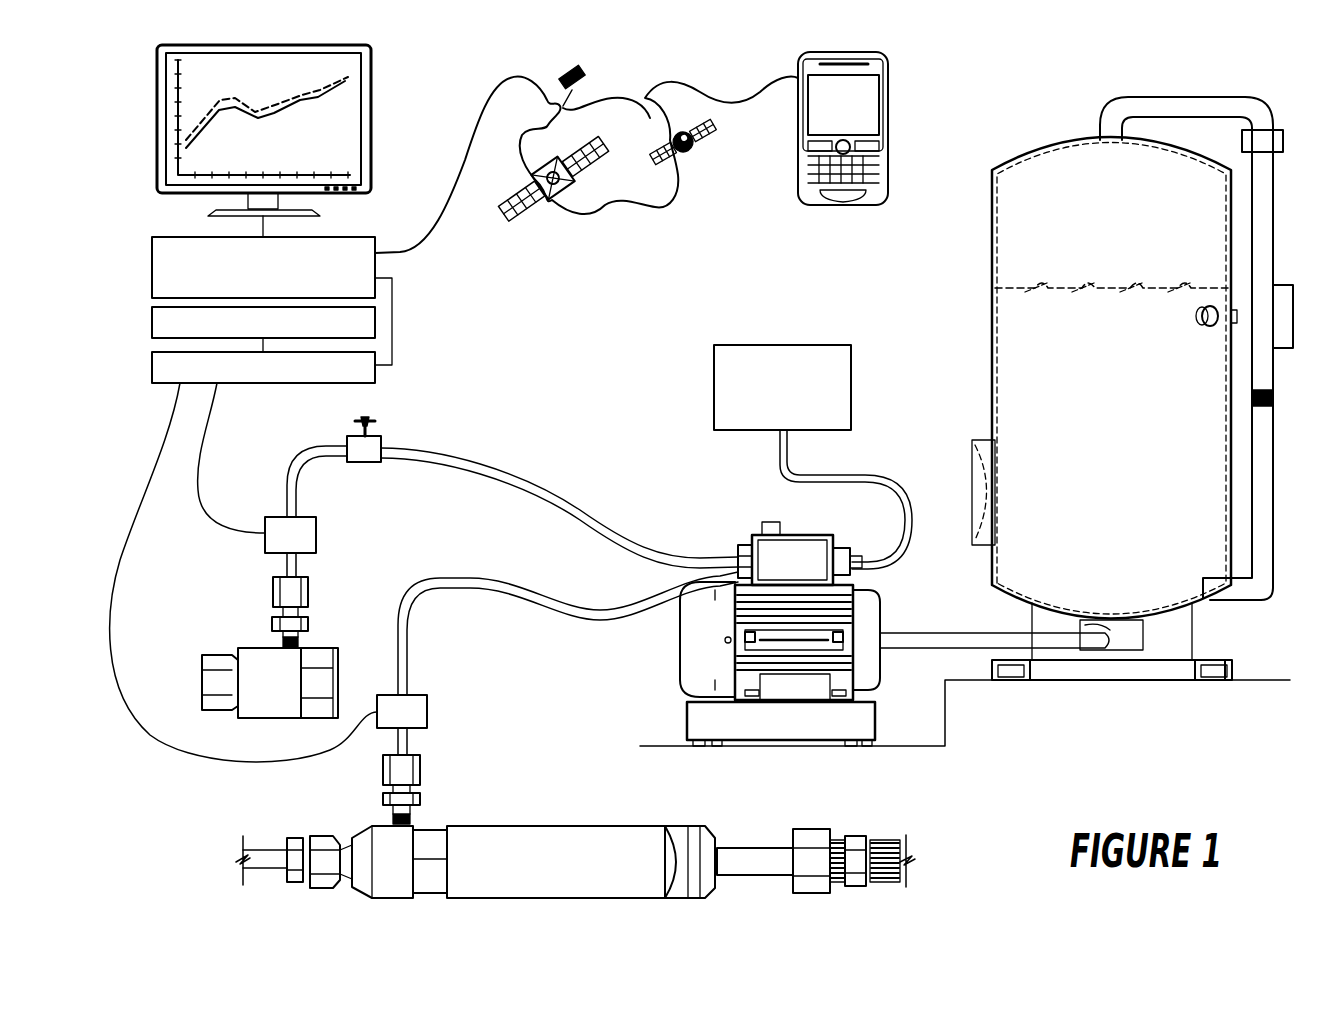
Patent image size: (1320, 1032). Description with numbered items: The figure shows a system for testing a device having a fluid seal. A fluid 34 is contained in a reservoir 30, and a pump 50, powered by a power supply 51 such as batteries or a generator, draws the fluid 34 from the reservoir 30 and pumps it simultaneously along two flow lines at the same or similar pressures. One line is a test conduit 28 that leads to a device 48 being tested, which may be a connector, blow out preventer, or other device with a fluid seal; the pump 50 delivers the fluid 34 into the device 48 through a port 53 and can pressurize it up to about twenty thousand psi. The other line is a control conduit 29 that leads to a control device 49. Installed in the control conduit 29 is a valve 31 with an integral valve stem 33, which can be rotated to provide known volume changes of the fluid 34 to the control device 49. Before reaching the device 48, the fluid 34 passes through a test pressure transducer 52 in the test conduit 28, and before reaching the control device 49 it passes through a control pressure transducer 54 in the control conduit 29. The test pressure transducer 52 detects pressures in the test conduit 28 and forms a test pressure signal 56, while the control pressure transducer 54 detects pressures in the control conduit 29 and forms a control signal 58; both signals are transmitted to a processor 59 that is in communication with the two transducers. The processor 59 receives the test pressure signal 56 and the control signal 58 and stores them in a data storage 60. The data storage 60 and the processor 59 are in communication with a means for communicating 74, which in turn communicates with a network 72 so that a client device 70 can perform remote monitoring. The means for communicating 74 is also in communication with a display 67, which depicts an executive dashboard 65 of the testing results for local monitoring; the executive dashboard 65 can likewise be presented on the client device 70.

The test conduit 28 is at (492, 582).
The control conduit 29 is at (430, 456).
The reservoir 30 is at (992, 246).
The valve 31 is at (366, 462).
The integral valve stem 33 is at (358, 421).
The fluid 34 is at (1140, 288).
The device being tested 48 is at (435, 808).
The control device 49 is at (326, 627).
The pump 50 is at (680, 640).
The power supply 51 is at (714, 386).
The test pressure transducer 52 is at (427, 712).
The port 53 is at (392, 818).
The control pressure transducer 54 is at (317, 533).
The test pressure signal 56 is at (138, 499).
The control signal 58 is at (208, 436).
The processor 59 is at (152, 366).
The data storage 60 is at (152, 321).
The executive dashboard 65 is at (332, 126).
The display 67 is at (371, 92).
The client device 70 is at (888, 100).
The network 72 is at (668, 203).
The means for communicating 74 is at (152, 264).